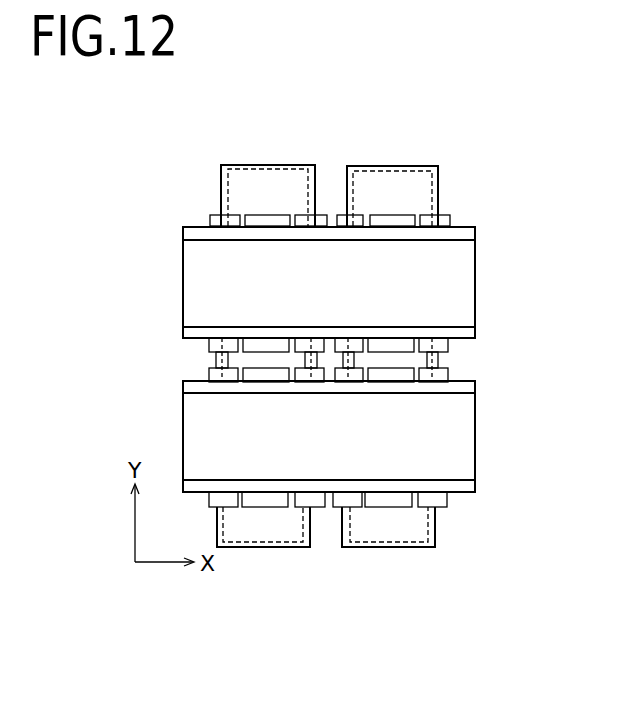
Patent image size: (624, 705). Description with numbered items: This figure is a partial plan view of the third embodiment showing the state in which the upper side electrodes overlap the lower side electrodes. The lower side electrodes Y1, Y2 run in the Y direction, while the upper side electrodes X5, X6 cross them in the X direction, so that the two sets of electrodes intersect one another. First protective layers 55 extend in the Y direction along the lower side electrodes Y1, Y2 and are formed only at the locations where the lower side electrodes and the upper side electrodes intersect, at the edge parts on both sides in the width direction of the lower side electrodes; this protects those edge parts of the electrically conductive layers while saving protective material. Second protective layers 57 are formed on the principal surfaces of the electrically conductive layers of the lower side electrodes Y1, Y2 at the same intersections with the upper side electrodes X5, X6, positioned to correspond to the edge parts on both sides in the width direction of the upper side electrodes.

The first protective layers 55 is at (215, 215).
The second protective layers 57 is at (266, 215).
The upper side electrode X5 is at (176, 285).
The upper side electrode X6 is at (176, 437).
The lower side electrode Y1 is at (269, 163).
The lower side electrode Y2 is at (394, 164).